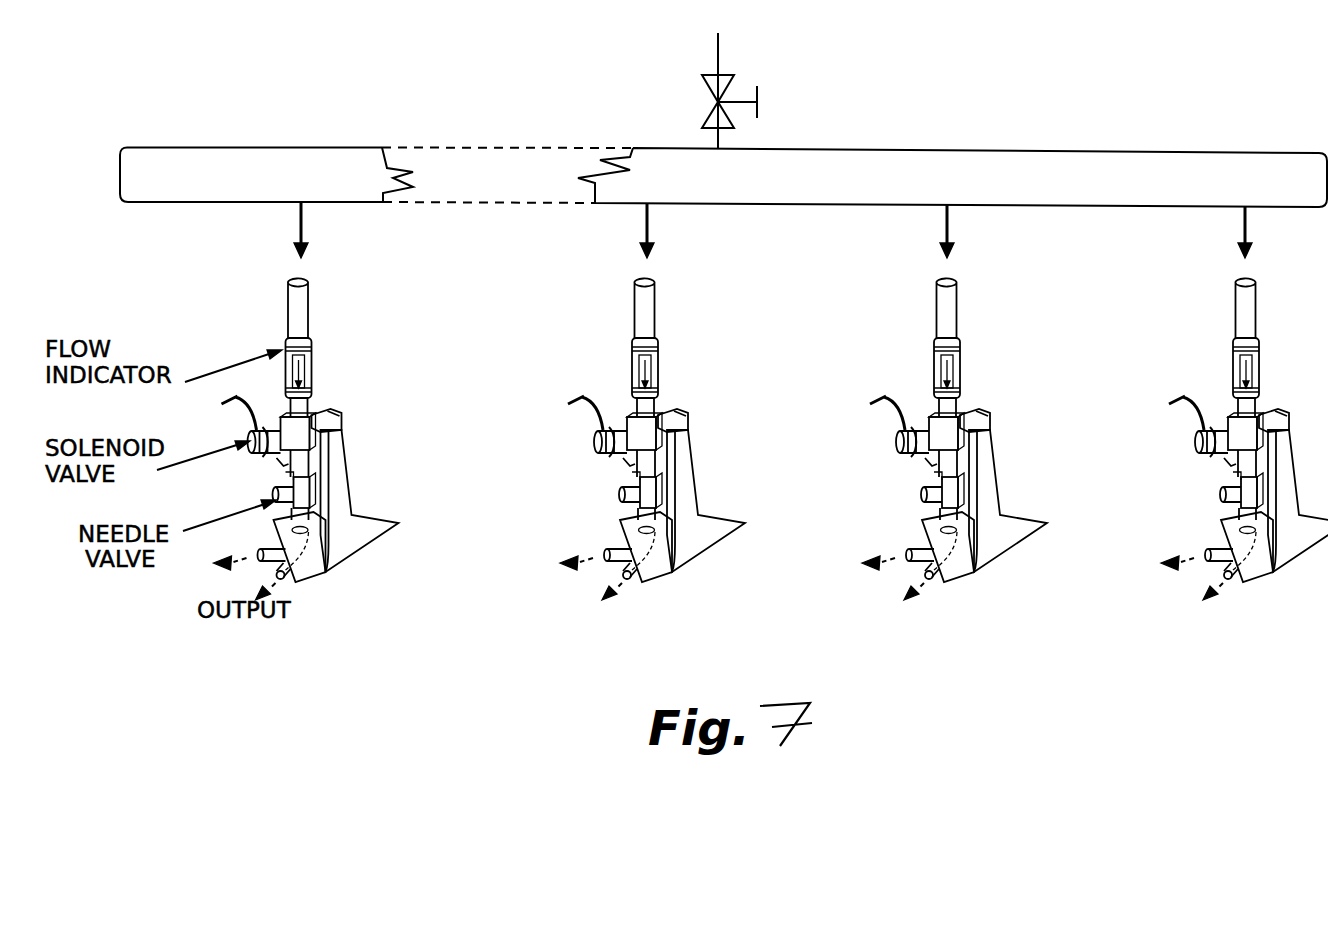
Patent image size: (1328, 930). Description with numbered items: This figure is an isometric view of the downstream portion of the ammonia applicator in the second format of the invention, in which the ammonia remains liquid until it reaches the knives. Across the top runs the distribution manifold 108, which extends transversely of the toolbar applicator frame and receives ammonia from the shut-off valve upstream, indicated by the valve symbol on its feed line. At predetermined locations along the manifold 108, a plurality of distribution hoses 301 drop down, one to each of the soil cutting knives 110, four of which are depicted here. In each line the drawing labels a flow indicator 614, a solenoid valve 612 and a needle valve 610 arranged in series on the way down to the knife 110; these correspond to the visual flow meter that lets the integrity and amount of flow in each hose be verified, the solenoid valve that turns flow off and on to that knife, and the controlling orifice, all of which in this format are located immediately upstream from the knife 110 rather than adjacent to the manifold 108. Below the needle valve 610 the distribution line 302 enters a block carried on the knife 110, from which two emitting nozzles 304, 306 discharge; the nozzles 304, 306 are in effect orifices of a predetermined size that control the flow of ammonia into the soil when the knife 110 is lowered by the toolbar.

The distribution manifold 108 is at (1043, 80).
The distribution hose 301 is at (632, 298).
The flow indicator 614 is at (620, 352).
The solenoid valve 612 is at (578, 418).
The needle valve 610 is at (608, 478).
The distribution hose 302 is at (620, 513).
The soil cutting knife 110 is at (364, 552).
The emitting nozzle 304 is at (212, 568).
The emitting nozzle 306 is at (304, 630).